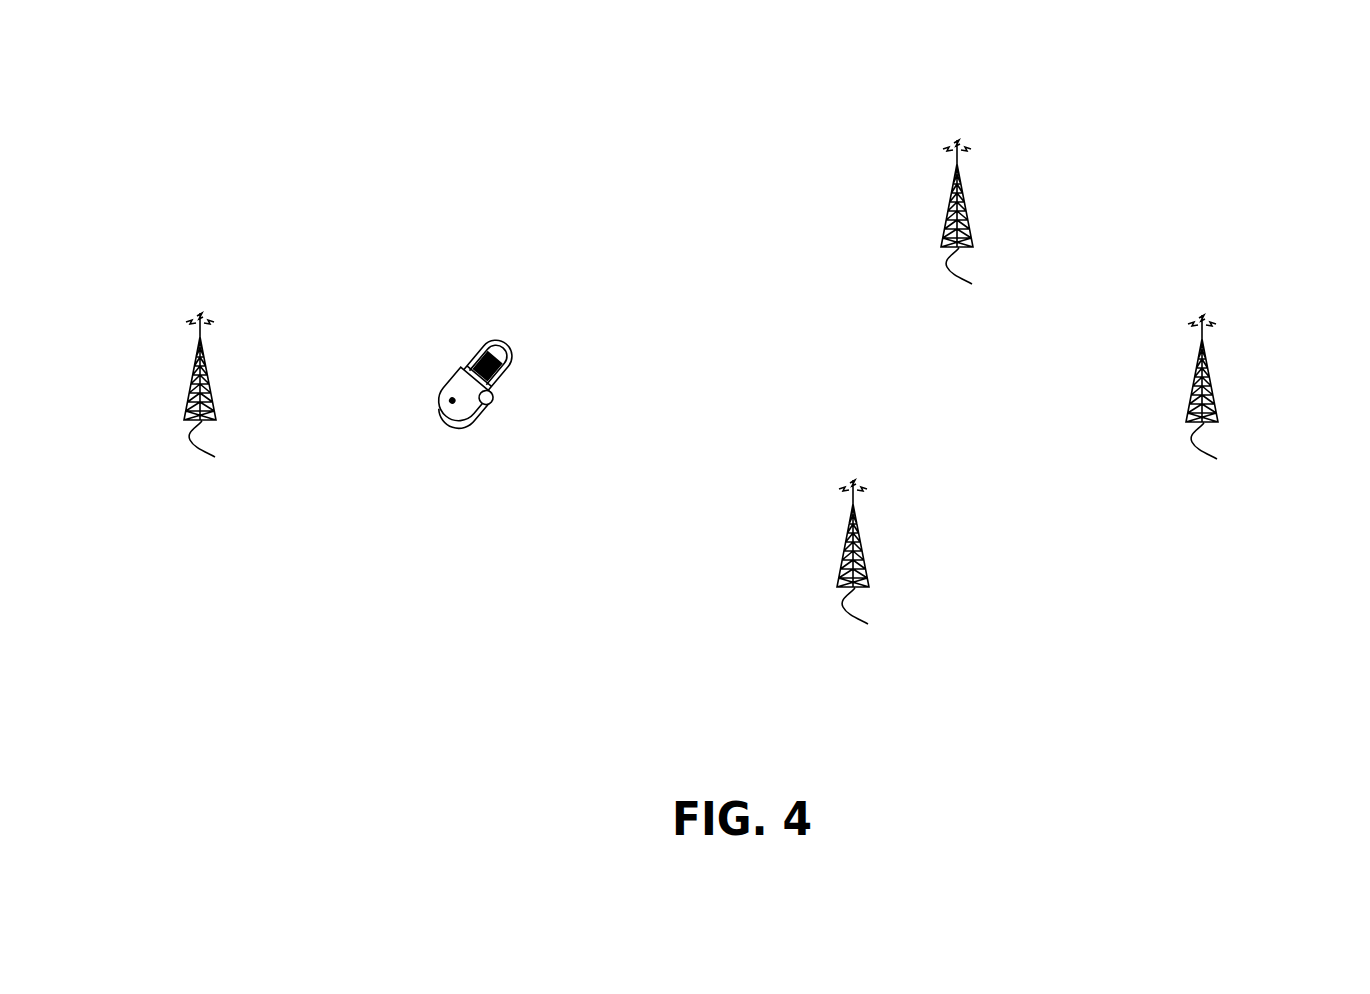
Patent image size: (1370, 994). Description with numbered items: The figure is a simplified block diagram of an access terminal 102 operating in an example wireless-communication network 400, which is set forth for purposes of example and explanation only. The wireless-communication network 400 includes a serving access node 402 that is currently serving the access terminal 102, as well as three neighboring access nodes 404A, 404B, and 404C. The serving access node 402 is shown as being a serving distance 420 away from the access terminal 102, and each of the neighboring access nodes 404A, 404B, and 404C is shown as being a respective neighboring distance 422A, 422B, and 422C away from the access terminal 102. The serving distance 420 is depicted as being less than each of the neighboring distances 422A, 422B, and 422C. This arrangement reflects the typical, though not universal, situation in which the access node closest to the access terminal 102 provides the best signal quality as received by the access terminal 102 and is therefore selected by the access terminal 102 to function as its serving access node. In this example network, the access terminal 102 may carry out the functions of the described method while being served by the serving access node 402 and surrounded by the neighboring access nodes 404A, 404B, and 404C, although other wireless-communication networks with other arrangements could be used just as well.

The wireless-communication network 400 is at (1244, 88).
The access terminal 102 is at (438, 389).
The serving access node 402 is at (241, 398).
The neighboring access node 404A is at (1248, 400).
The neighboring access node 404B is at (1002, 225).
The neighboring access node 404C is at (897, 565).
The serving distance 420 is at (232, 344).
The neighboring distance 422A is at (533, 401).
The neighboring distance 422B is at (922, 169).
The neighboring distance 422C is at (535, 423).